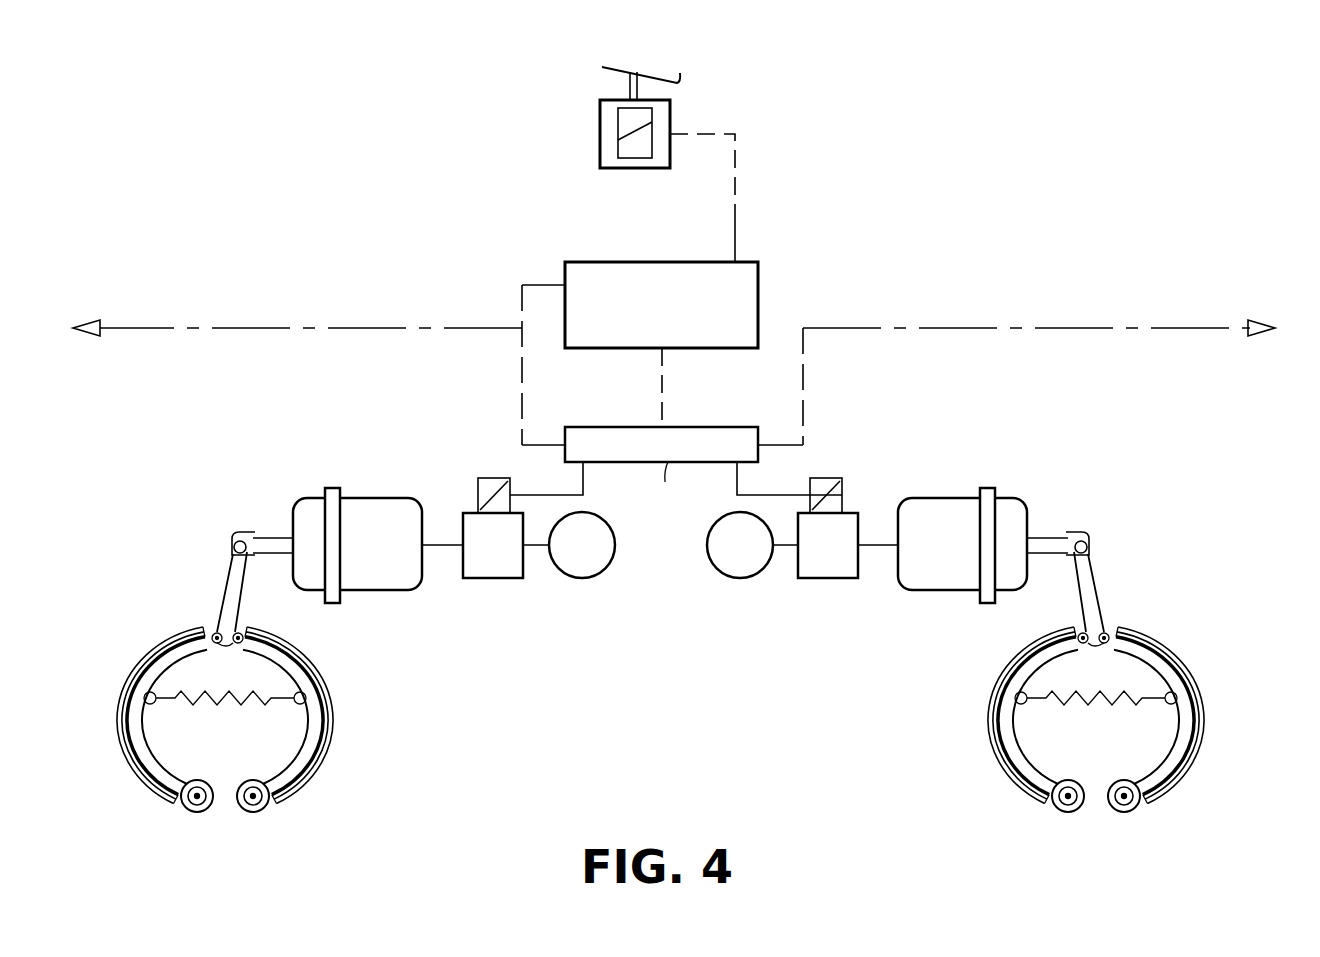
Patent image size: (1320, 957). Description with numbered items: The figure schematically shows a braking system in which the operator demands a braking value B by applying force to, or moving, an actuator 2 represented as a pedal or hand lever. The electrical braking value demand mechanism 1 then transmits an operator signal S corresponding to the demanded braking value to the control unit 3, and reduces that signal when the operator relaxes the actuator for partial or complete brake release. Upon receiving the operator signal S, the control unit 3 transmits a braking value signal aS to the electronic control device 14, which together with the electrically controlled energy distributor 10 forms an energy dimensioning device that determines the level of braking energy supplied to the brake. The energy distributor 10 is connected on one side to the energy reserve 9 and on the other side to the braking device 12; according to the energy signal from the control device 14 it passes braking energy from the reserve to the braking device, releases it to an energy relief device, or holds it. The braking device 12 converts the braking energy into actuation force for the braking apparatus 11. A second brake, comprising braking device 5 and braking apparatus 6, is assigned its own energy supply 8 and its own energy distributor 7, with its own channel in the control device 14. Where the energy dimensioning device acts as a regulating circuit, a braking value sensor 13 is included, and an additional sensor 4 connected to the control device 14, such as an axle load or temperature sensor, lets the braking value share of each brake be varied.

The braking value demand mechanism 1 is at (606, 130).
The actuator 2 is at (644, 74).
The braking value B is at (618, 85).
The operator signal S is at (740, 200).
The control unit 3 is at (745, 270).
The braking value sensor 13 is at (100, 322).
The additional sensor 4 is at (1256, 322).
The braking value signal aS is at (664, 410).
The control device 14 is at (594, 438).
The energy distributor 10 is at (493, 567).
The energy distributor 7 is at (836, 567).
The energy reserve 9 is at (577, 565).
The energy supply 8 is at (745, 568).
The braking device 12 is at (390, 513).
The braking device 5 is at (947, 515).
The braking apparatus 11 is at (211, 602).
The braking apparatus 6 is at (1109, 602).